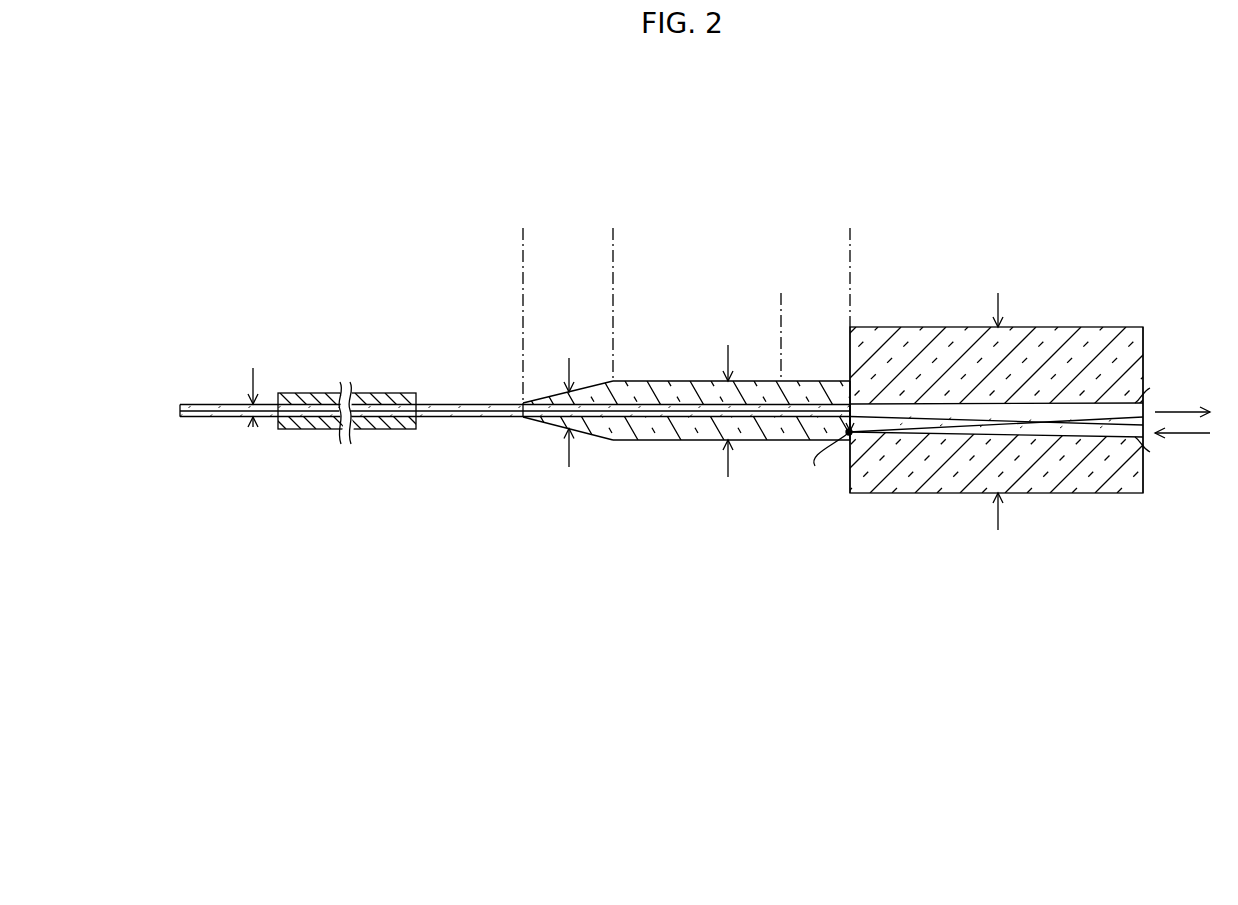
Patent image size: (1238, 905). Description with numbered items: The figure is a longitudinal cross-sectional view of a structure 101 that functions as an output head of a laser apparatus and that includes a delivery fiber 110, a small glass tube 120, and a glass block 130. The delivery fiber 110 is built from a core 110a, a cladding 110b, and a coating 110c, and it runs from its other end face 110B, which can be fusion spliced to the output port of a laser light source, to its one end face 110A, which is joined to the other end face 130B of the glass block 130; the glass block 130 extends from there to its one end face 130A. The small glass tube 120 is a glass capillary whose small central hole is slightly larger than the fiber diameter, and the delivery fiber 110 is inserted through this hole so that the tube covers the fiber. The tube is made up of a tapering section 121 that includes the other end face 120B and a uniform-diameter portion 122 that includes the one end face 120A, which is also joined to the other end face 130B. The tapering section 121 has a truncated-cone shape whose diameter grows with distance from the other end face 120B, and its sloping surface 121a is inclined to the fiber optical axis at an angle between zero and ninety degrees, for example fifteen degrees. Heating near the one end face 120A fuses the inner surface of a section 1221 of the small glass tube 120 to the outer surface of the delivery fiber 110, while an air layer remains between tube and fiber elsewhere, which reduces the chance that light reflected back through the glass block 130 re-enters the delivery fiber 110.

The structure 101 is at (898, 121).
The delivery fiber 110 is at (360, 329).
The core 110a is at (456, 404).
The cladding 110b is at (470, 420).
The coating 110c is at (397, 393).
The one end face of the delivery fiber 110A is at (856, 408).
The other end face of the delivery fiber 110B is at (180, 417).
The small glass tube 120 is at (552, 179).
The one end face of the small glass tube 120A is at (850, 400).
The other end face of the small glass tube 120B is at (522, 403).
The tapering section 121 is at (523, 238).
The sloping surface 121a is at (577, 392).
The uniform-diameter portion 122 is at (613, 238).
The section near the one end face 1221 is at (850, 302).
The glass block 130 is at (1052, 327).
The one end face of the glass block 130A is at (1143, 494).
The other end face of the glass block 130B is at (851, 494).